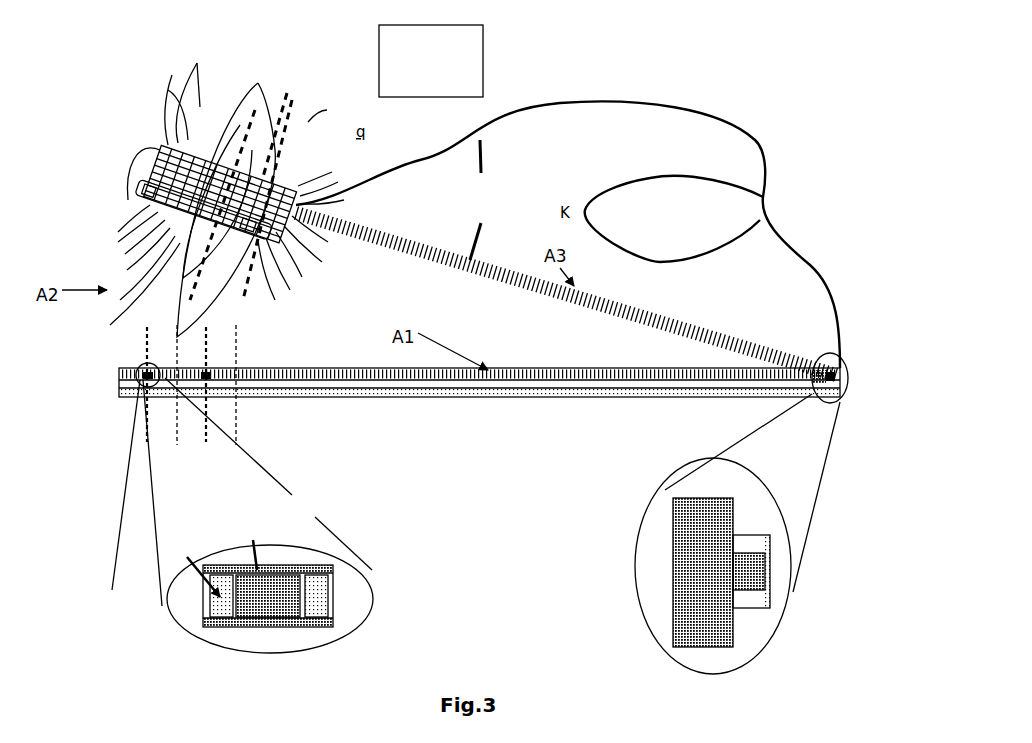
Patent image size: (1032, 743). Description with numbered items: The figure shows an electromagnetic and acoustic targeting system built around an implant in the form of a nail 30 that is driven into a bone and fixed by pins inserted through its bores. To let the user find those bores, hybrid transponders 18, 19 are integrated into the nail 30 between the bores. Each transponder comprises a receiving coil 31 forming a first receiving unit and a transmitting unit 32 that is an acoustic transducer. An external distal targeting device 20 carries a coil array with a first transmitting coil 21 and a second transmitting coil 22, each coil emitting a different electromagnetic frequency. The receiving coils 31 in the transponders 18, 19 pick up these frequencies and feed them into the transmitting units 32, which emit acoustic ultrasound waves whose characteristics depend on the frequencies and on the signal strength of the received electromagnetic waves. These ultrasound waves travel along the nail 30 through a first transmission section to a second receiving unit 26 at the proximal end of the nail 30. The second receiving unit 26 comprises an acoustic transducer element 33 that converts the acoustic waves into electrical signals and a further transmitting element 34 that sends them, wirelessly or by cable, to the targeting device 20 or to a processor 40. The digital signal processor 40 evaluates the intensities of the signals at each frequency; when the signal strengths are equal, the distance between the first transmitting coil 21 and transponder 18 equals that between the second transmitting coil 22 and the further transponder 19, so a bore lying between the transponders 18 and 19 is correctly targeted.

The transponder 18 is at (170, 609).
The transponder 19 is at (218, 381).
The distal targeting device 20 is at (145, 73).
The first transmitting coil 21 is at (140, 187).
The second transmitting coil 22 is at (297, 176).
The second receiving unit 26 is at (648, 598).
The nail 30 is at (470, 408).
The receiving coil 31 is at (228, 628).
The transmitting unit 32 is at (291, 622).
The acoustic transducer element 33 is at (750, 580).
The further transmitting element 34 is at (673, 553).
The processor 40 is at (431, 61).